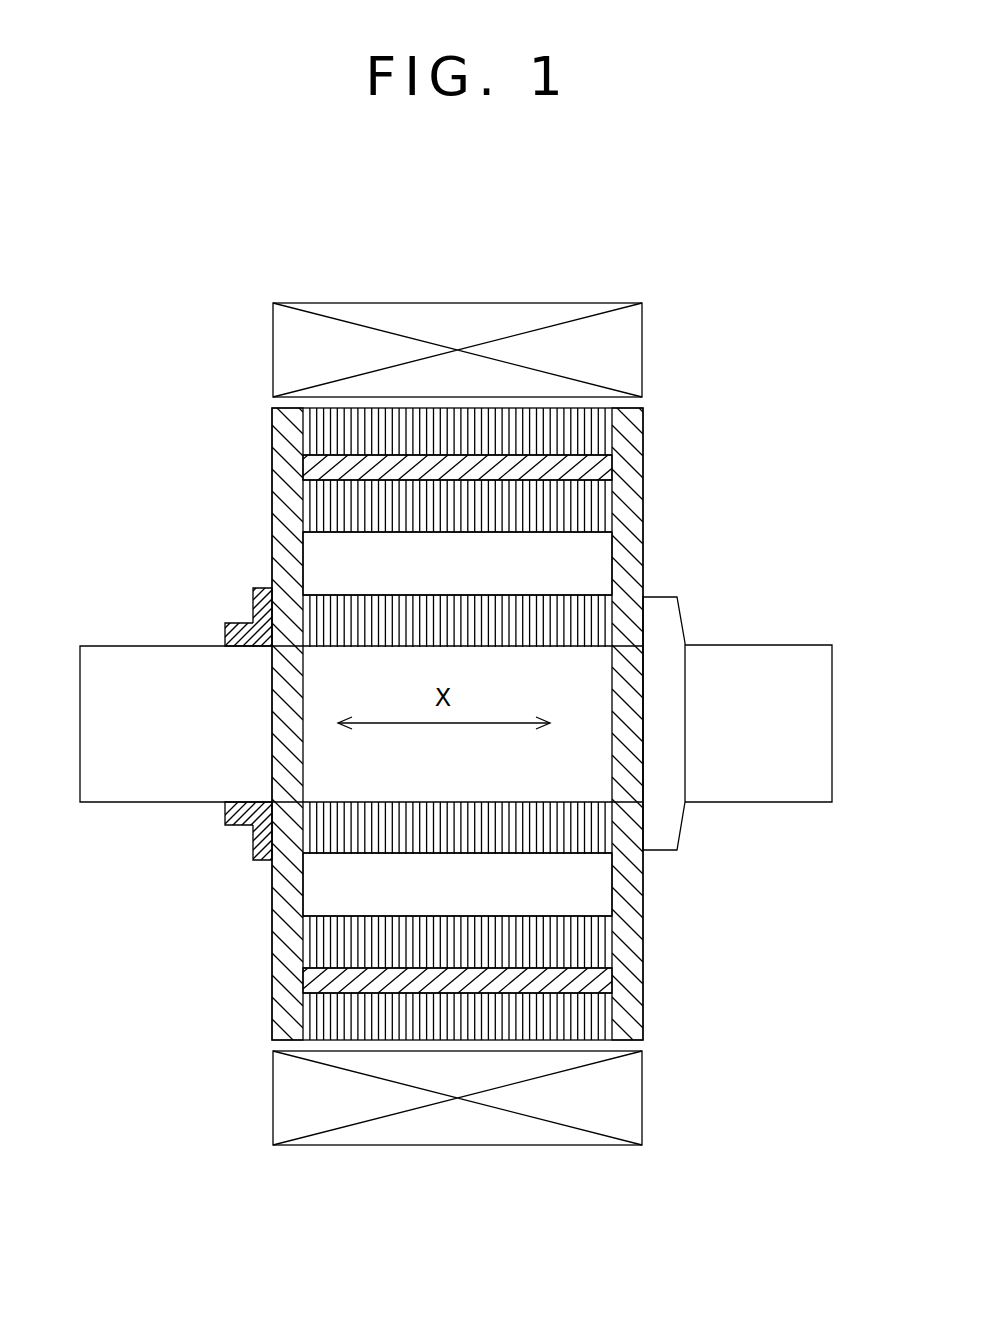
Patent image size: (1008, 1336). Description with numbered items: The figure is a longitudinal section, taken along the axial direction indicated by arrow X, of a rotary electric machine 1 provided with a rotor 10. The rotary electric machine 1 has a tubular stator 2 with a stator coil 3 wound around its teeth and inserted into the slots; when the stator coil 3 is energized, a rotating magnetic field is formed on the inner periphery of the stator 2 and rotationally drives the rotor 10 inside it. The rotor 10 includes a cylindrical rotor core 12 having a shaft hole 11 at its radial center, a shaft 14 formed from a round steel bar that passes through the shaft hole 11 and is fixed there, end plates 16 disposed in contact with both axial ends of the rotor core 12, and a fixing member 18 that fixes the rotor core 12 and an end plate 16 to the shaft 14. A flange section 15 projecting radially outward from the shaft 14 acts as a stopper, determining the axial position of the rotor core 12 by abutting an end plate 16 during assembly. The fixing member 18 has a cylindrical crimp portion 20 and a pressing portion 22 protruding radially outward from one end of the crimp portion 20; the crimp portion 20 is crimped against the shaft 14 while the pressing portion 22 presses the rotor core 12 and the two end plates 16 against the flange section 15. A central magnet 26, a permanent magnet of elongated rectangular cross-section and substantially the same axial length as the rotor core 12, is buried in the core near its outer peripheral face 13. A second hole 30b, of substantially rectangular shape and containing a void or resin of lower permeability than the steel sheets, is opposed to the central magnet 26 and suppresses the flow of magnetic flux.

The rotary electric machine 1 is at (730, 289).
The stator 2 is at (615, 297).
The stator coil 3 is at (433, 318).
The rotor 10 is at (648, 410).
The shaft hole 11 is at (343, 647).
The rotor core 12 is at (475, 404).
The outer peripheral face 13 is at (553, 408).
The shaft 14 is at (773, 644).
The flange section 15 is at (664, 597).
The end plate 16 is at (272, 430).
The fixing member 18 is at (219, 673).
The crimp portion 20 is at (243, 623).
The pressing portion 22 is at (254, 598).
The central magnet 26 is at (365, 470).
The second hole 30b is at (488, 577).